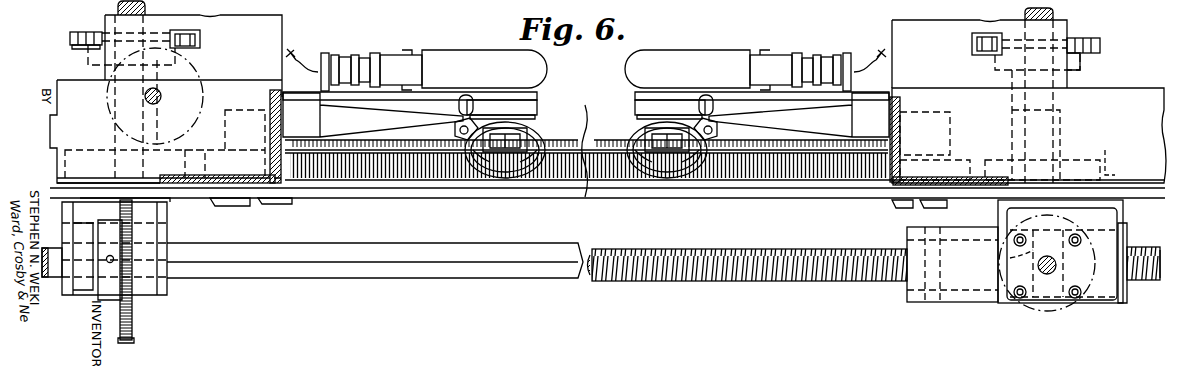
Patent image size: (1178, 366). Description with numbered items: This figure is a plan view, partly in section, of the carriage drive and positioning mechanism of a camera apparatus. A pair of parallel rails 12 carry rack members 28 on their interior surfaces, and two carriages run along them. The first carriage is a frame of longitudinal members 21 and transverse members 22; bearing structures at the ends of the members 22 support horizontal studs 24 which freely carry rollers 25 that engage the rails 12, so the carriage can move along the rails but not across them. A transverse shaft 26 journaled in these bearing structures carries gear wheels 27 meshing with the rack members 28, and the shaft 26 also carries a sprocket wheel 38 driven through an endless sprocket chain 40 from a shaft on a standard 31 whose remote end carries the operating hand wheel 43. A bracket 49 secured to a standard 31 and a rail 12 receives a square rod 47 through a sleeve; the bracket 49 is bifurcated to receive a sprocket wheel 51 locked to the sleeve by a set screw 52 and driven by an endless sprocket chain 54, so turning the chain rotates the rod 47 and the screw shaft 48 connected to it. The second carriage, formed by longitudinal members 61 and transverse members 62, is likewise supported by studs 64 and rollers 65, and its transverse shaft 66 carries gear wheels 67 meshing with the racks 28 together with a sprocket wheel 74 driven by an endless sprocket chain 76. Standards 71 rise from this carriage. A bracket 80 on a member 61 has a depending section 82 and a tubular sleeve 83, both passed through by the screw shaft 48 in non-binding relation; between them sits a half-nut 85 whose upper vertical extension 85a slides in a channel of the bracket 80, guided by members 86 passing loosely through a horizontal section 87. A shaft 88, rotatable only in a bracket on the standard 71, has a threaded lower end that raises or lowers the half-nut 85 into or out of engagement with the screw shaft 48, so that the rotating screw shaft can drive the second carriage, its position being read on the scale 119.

The rail 12 is at (348, 190).
The longitudinal carriage member 21 is at (166, 131).
The transverse carriage member 22 is at (283, 17).
The stud 24 is at (235, 206).
The roller 25 is at (278, 200).
The transverse shaft 26 is at (118, 8).
The gear wheel 27 is at (68, 150).
The rack member 28 is at (408, 190).
The vertical member or standard 31 is at (272, 95).
The sprocket wheel 38 is at (98, 42).
The endless sprocket chain 40 is at (70, 34).
The operating hand wheel 43 is at (162, 96).
The rod 47 is at (350, 270).
The screw shaft 48 is at (662, 281).
The bracket 49 is at (167, 233).
The sprocket wheel 51 is at (132, 320).
The set screw 52 is at (112, 265).
The endless sprocket chain 54 is at (134, 340).
The longitudinal carriage member 61 is at (1029, 135).
The transverse carriage member 62 is at (986, 54).
The stud 64 is at (905, 206).
The roller 65 is at (885, 190).
The transverse shaft 66 is at (1053, 12).
The gear wheel 67 is at (1107, 165).
The vertical member or standard 71 is at (902, 100).
The sprocket wheel 74 is at (1082, 56).
The endless sprocket chain 76 is at (1100, 42).
The bracket 80 is at (1120, 240).
The bracket section 82 is at (1128, 292).
The tubular sleeve 83 is at (925, 292).
The half-nut 85 is at (1070, 242).
The upper vertical extension 85a is at (1010, 258).
The guide member 86 is at (1026, 240).
The horizontal section 87 is at (1102, 295).
The shaft 88 is at (1050, 275).
The scale 119 is at (578, 130).